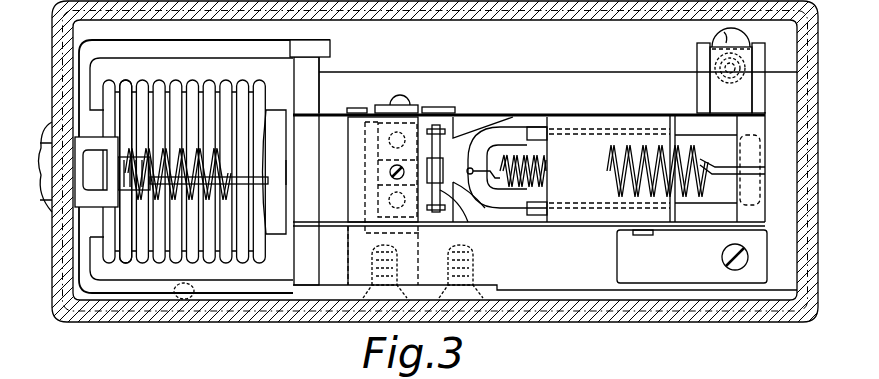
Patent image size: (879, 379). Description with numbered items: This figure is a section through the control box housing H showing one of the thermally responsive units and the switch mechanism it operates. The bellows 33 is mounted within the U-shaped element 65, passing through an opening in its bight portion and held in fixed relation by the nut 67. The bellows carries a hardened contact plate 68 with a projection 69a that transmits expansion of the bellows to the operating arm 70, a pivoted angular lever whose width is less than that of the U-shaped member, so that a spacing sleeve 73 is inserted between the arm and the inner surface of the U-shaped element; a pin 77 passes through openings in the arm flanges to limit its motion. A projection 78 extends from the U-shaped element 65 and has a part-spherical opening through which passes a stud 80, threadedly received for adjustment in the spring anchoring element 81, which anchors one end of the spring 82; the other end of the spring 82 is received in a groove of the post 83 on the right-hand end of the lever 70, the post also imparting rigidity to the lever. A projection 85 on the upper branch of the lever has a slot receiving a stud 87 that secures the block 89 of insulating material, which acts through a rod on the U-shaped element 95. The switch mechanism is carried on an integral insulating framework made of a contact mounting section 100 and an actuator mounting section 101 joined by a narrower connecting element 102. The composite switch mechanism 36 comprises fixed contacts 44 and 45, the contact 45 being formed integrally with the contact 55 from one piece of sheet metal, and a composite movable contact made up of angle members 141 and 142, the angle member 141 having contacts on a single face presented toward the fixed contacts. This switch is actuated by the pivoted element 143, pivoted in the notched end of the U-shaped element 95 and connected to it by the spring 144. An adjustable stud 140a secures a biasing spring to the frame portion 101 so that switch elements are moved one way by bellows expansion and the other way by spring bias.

The housing H is at (627, 321).
The U-shaped element 65 is at (272, 50).
The bellows 33 is at (211, 80).
The spring anchoring element 81 is at (127, 80).
The spring 82 is at (221, 258).
The stud 80 is at (100, 190).
The projection 78 is at (78, 200).
The nut 67 is at (50, 127).
The hardened contact plate 68 is at (278, 112).
The spacing sleeve 73 is at (322, 86).
The pin 77 is at (322, 66).
The actuator mounting section 101 is at (573, 120).
The operating arm 70 is at (497, 114).
The fixed contact 44 is at (367, 188).
The projection 69a is at (287, 166).
The contact mounting section 100 is at (358, 108).
The fixed contact 45 is at (405, 110).
The contact 55 is at (448, 110).
The composite switch mechanism 36 is at (482, 133).
The angle member 141 is at (431, 148).
The pivoted element 143 is at (532, 137).
The spring 144 is at (547, 171).
The angle member 142 is at (447, 192).
The U-shaped element 95 is at (690, 130).
The post 83 is at (752, 190).
The insulating block 89 is at (700, 63).
The projection 85 is at (744, 93).
The stud 87 is at (749, 39).
The adjustable stud 140a is at (724, 258).
The connecting element 102 is at (485, 272).